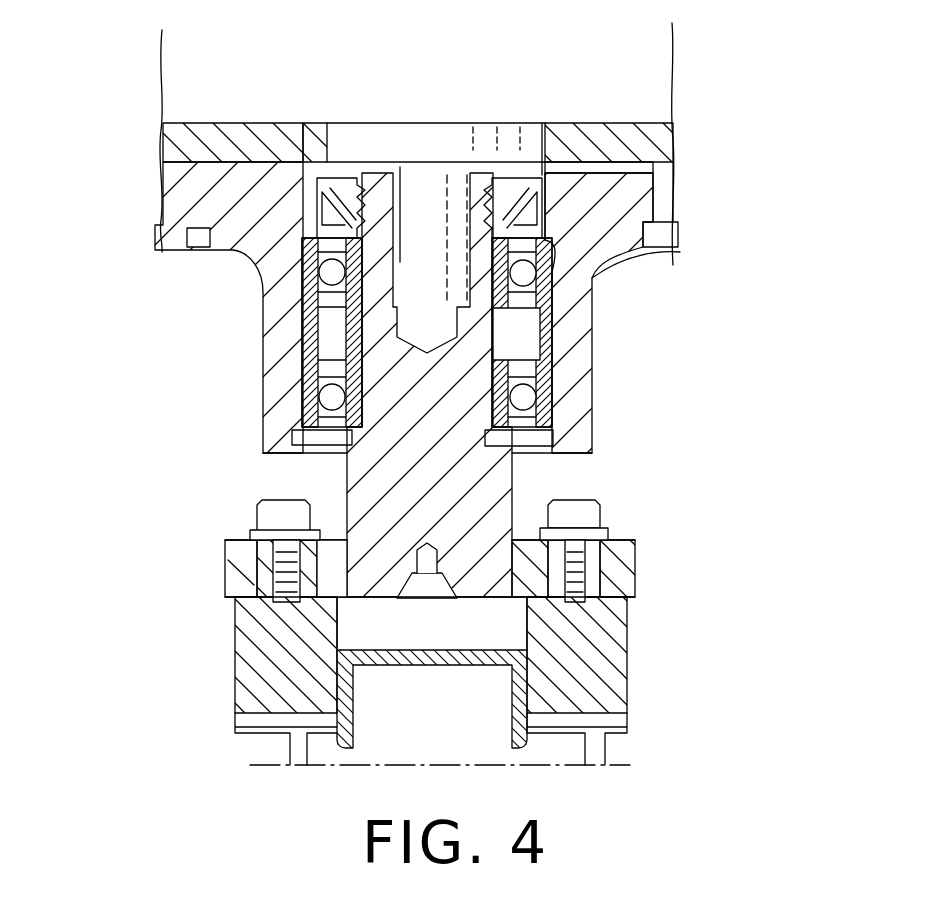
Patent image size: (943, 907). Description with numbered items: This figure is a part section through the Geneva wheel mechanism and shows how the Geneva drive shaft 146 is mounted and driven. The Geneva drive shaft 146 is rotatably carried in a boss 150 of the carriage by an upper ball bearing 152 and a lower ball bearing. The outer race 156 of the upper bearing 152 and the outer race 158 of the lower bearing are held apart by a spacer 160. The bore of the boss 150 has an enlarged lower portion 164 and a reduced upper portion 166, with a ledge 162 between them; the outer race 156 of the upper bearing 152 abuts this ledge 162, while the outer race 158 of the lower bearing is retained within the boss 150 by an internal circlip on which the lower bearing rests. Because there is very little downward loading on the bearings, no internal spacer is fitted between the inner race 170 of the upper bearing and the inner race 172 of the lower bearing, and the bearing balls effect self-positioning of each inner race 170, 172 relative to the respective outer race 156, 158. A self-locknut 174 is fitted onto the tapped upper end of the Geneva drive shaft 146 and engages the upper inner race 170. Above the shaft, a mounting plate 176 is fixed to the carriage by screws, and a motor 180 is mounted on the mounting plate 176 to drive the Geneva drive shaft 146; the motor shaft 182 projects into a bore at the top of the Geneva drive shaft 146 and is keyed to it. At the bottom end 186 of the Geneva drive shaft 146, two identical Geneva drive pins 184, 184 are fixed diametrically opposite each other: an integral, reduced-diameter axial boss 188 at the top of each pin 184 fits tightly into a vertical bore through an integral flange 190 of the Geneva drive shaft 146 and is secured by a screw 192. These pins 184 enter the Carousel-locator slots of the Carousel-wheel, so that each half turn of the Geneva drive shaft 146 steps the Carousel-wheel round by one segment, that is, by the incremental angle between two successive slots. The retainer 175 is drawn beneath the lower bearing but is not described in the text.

The Geneva drive shaft 146 is at (400, 468).
The boss 150 is at (597, 418).
The upper ball bearing 152 is at (300, 284).
The outer race of upper bearing 156 is at (597, 270).
The outer race of lower bearing 158 is at (560, 398).
The spacer 160 is at (553, 340).
The ledge 162 is at (683, 215).
The enlarged lower portion 164 is at (677, 242).
The reduced upper portion 166 is at (680, 173).
The inner race of upper bearing 170 is at (300, 338).
The inner race of lower bearing 172 is at (310, 356).
The self-locknut 174 is at (512, 190).
The bearing retainer 175 is at (300, 447).
The mounting plate 176 is at (212, 133).
The motor 180 is at (628, 84).
The motor shaft 182 is at (423, 190).
The Geneva drive pin 184 is at (250, 637).
The bottom end of Geneva drive shaft 186 is at (493, 580).
The axial boss 188 is at (233, 568).
The integral flange 190 is at (610, 543).
The screw 192 is at (255, 502).